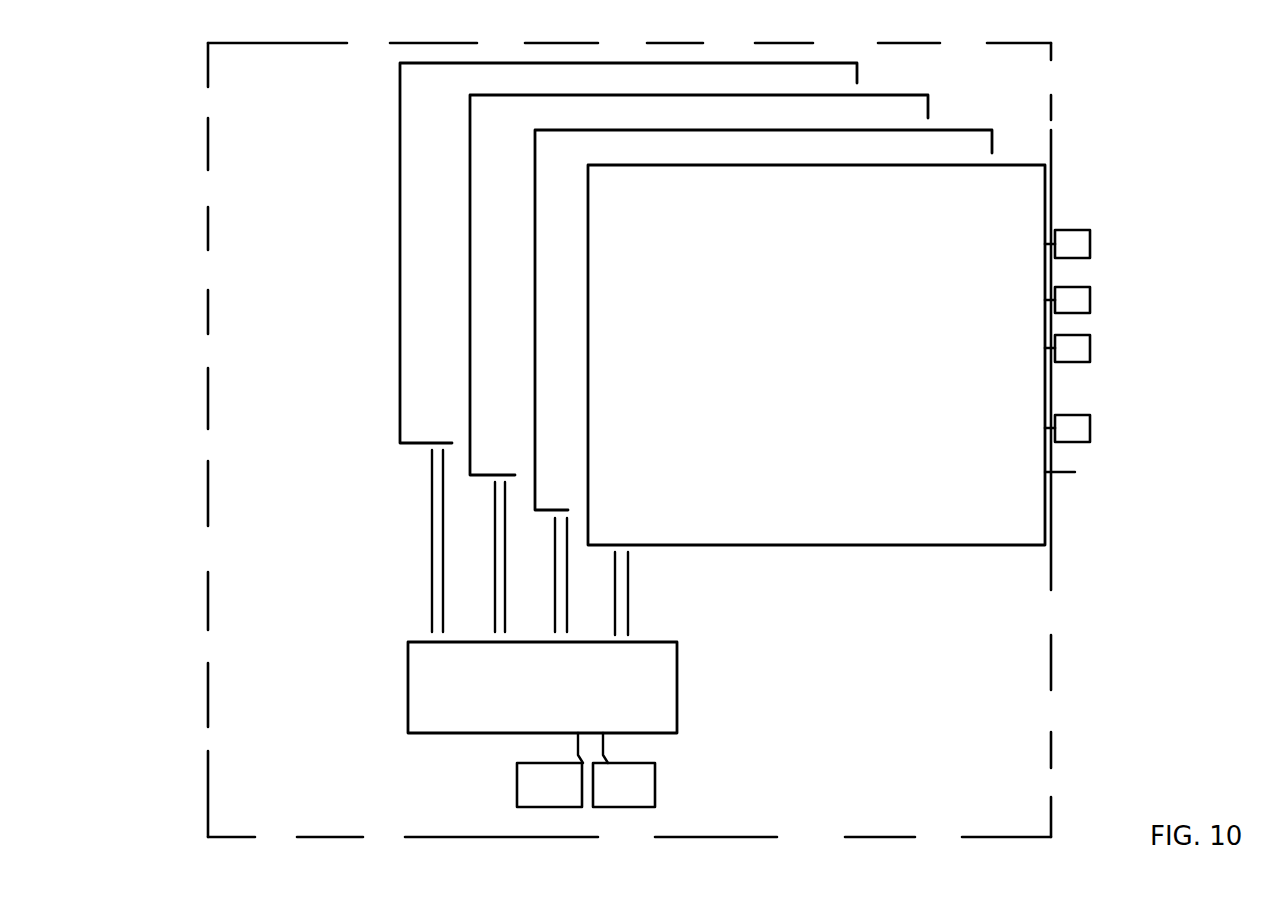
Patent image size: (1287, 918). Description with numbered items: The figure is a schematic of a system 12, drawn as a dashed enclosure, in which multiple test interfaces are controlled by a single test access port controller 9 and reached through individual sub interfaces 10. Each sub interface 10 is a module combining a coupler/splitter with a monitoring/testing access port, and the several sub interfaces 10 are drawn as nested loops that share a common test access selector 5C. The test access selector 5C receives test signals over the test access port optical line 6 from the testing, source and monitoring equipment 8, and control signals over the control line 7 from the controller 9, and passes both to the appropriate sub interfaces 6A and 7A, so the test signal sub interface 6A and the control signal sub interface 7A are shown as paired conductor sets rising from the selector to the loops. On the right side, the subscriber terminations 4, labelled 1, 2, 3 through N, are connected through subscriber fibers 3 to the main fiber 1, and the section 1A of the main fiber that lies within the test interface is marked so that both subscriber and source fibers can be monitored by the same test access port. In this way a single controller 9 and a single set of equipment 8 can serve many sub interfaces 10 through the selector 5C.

The system 12 is at (195, 403).
The sub interface 10 is at (568, 317).
The test signal sub interface 6A is at (537, 545).
The control signal sub interface 7A is at (598, 622).
The subscriber terminations 4 is at (1090, 300).
The main fiber 1 is at (1088, 245).
The channel 2 is at (1088, 301).
The subscriber fibers 3 is at (1088, 355).
The channel N is at (1090, 424).
The main fiber section within test interface 1A is at (1062, 497).
The test access selector 5C is at (687, 707).
The test access port optical line 6 is at (532, 748).
The control line 7 is at (633, 748).
The testing, source and monitoring equipment 8 is at (505, 793).
The test access port controller 9 is at (672, 803).